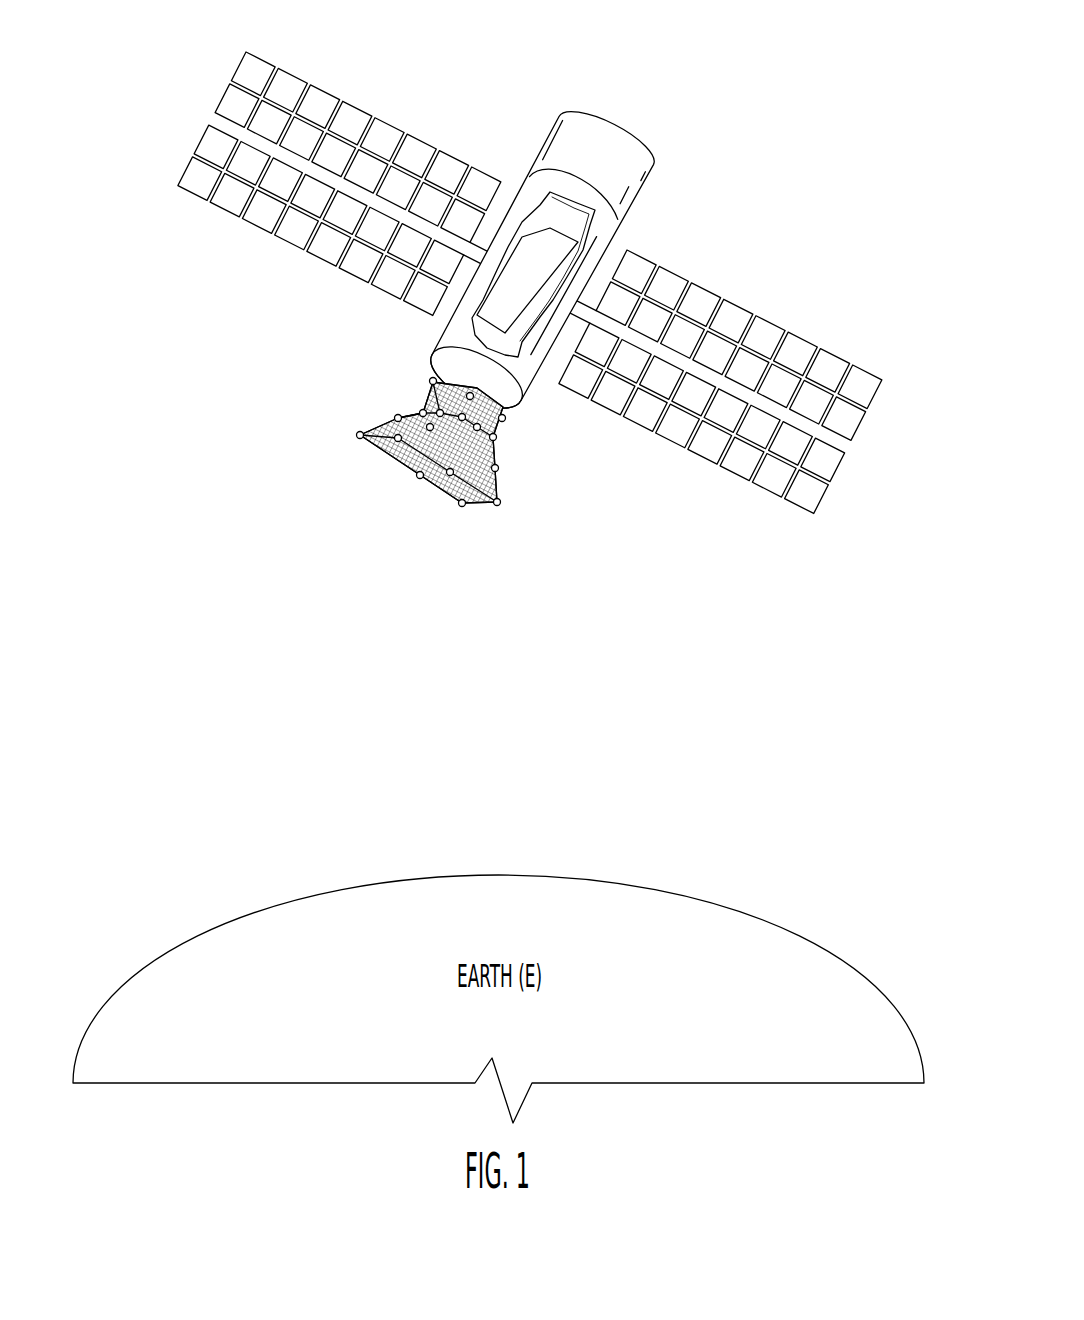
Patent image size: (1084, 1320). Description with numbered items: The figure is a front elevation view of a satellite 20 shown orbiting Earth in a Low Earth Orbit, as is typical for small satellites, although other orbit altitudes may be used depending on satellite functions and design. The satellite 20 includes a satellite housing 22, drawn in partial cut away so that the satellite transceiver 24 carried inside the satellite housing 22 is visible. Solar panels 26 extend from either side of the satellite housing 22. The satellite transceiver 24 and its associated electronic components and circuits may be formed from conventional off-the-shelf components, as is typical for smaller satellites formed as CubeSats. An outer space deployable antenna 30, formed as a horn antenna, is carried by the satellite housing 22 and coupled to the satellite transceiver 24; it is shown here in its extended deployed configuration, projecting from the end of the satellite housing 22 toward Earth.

The satellite 20 is at (530, 294).
The satellite housing 22 is at (608, 246).
The satellite transceiver 24 is at (477, 315).
The solar panels 26 is at (787, 350).
The outer space deployable antenna 30 is at (343, 453).